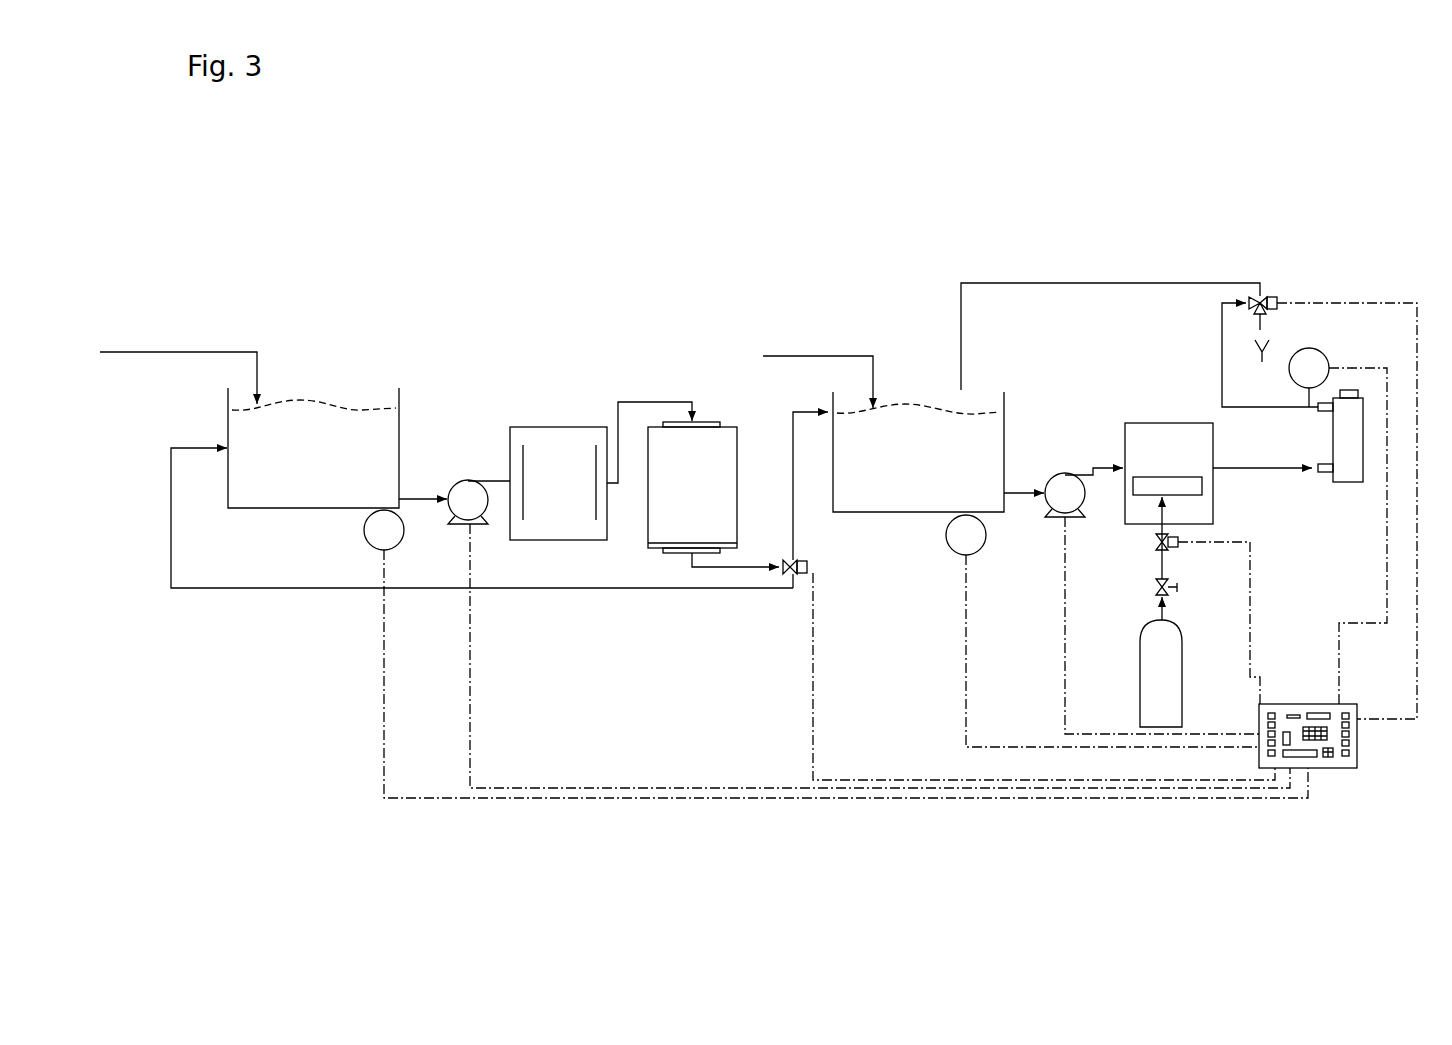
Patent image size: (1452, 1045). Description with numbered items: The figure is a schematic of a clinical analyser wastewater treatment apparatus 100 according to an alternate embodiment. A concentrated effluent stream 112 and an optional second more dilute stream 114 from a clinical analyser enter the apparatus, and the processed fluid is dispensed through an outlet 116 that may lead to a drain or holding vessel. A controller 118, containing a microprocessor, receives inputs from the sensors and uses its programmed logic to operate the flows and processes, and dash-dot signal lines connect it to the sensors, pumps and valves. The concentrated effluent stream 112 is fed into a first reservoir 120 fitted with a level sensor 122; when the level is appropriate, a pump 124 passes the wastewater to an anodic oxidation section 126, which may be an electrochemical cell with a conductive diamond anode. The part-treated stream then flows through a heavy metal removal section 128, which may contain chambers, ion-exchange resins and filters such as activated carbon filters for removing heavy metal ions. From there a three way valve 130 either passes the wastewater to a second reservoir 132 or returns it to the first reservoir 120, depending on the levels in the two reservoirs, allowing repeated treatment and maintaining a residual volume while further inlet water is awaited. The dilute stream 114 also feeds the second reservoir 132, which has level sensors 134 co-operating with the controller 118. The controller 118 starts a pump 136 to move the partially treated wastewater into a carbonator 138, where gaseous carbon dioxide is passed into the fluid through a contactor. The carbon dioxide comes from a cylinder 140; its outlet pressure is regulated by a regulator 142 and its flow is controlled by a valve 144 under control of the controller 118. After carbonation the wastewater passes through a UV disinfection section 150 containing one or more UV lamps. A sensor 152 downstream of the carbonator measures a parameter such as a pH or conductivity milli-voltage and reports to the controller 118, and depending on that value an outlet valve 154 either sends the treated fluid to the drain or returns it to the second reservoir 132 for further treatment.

The clinical analyser wastewater treatment apparatus 100 is at (238, 270).
The concentrated effluent stream 112 is at (229, 350).
The second more dilute stream 114 is at (821, 353).
The outlet 116 is at (1254, 330).
The controller 118 is at (1359, 736).
The first reservoir 120 is at (314, 381).
The level sensor 122 is at (362, 528).
The pump 124 is at (462, 479).
The anodic oxidation section 126 is at (572, 425).
The heavy metal removal section 128 is at (719, 421).
The three way valve 130 is at (811, 561).
The second reservoir 132 is at (916, 389).
The level sensors 134 is at (945, 546).
The pump 136 is at (1051, 509).
The carbonator 138 is at (1161, 419).
The cylinder 140 is at (1139, 696).
The regulator 142 is at (1178, 592).
The valve 144 is at (1179, 549).
The UV disinfection section 150 is at (1366, 404).
The sensor 152 is at (1310, 346).
The outlet valve 154 is at (1283, 300).